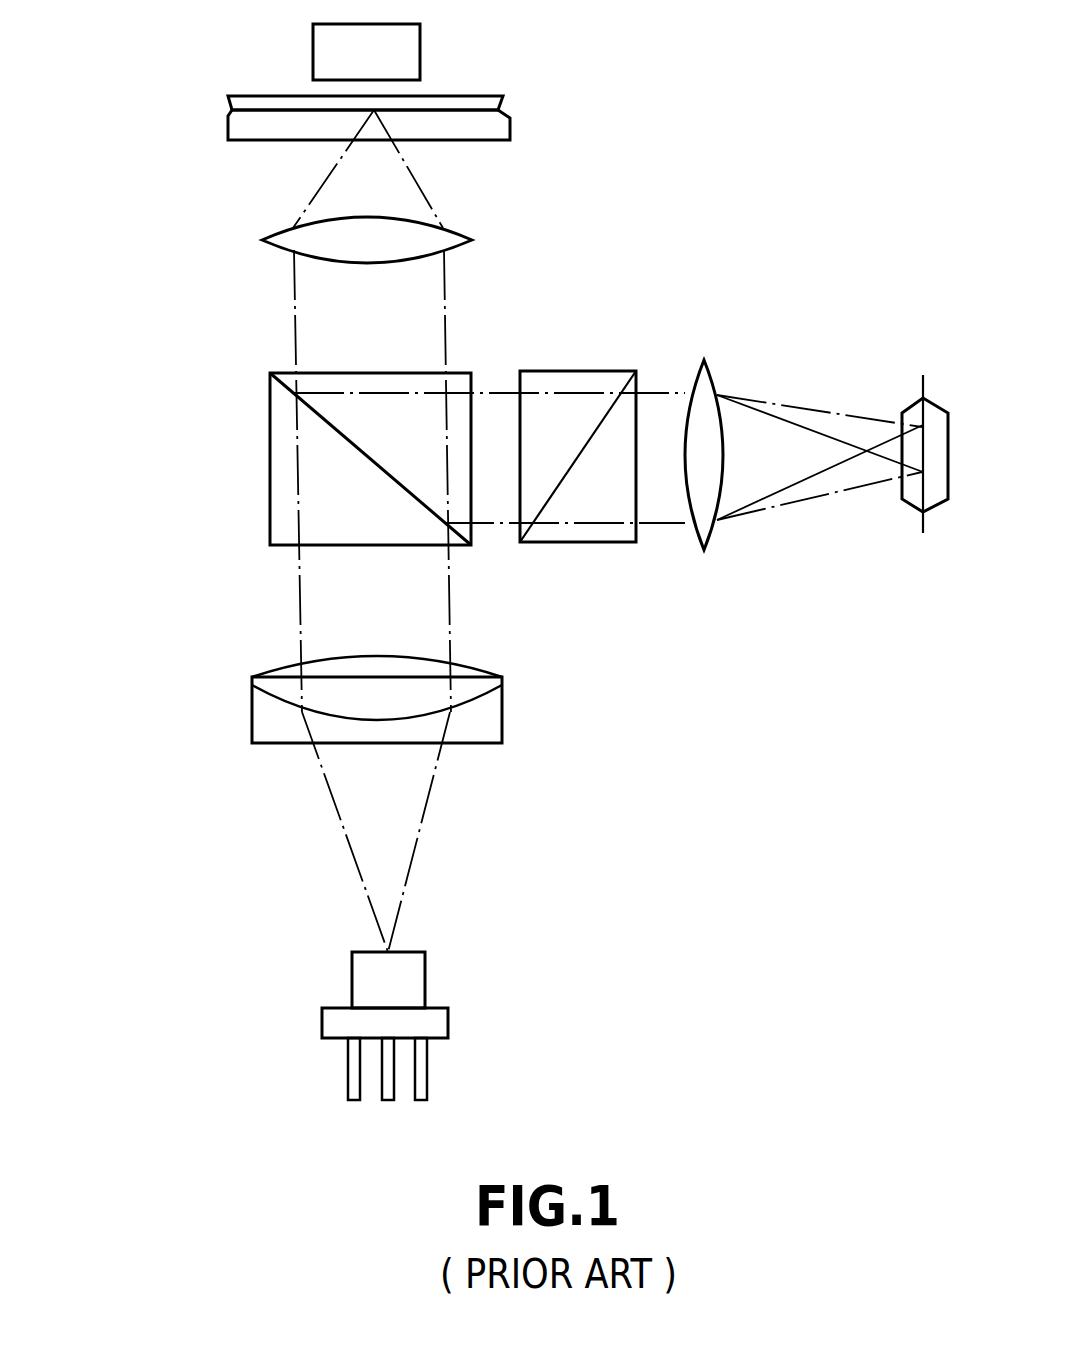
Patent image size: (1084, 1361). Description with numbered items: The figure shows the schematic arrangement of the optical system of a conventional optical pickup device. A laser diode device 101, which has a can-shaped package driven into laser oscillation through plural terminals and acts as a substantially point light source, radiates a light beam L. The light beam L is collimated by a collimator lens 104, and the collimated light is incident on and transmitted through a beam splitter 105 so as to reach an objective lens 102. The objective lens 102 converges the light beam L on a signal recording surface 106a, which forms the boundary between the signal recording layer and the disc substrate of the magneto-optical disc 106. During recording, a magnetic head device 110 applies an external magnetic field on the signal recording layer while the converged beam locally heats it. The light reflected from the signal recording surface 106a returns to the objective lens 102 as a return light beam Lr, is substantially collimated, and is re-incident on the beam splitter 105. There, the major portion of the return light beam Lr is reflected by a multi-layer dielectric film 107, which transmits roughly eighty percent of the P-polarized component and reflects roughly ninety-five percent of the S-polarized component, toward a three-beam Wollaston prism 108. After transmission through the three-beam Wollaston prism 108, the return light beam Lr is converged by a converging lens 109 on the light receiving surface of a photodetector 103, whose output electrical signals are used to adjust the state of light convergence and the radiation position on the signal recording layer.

The laser diode device 101 is at (425, 965).
The objective lens 102 is at (262, 240).
The photodetector 103 is at (907, 500).
The collimator lens 104 is at (502, 685).
The beam splitter 105 is at (268, 527).
The magneto-optical disc 106 is at (225, 122).
The signal recording surface 106a is at (265, 107).
The multi-layer dielectric film 107 is at (337, 430).
The three-beam Wollaston prism 108 is at (567, 371).
The converging lens 109 is at (710, 533).
The magnetic head device 110 is at (420, 50).
The light beam L is at (422, 835).
The return light beam Lr is at (770, 398).